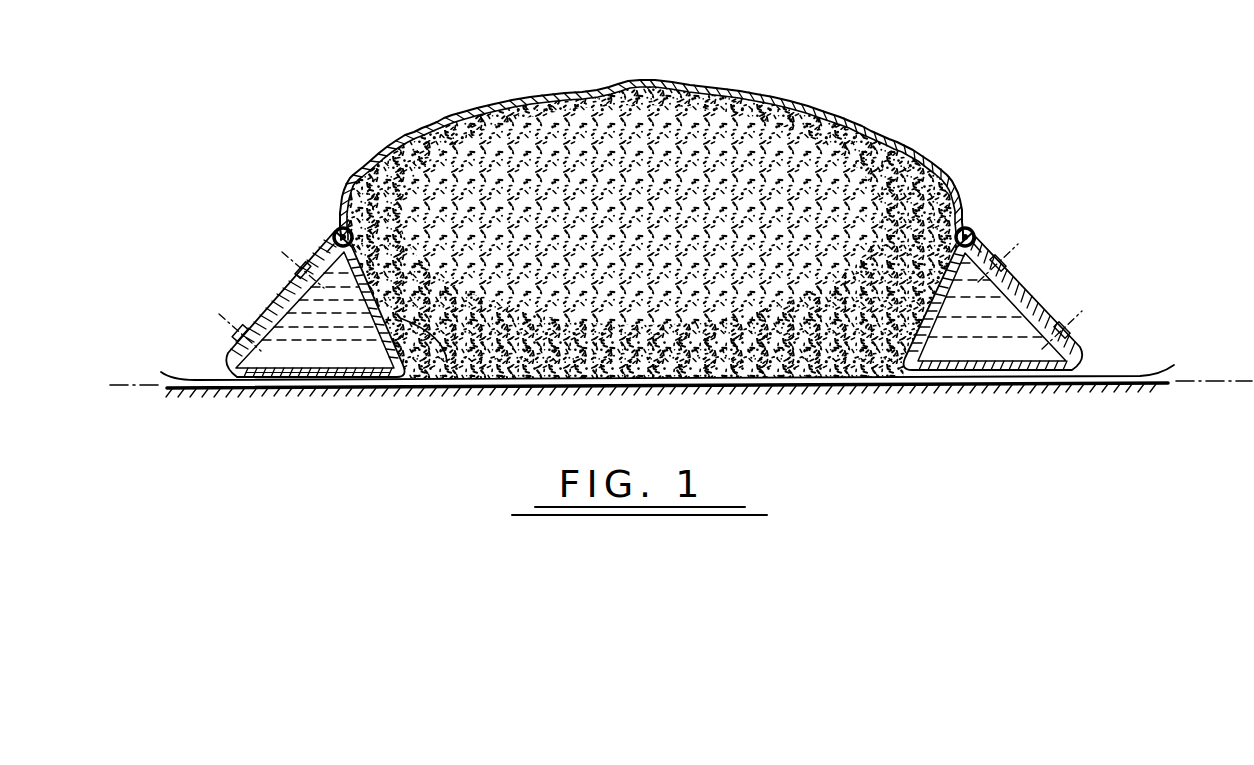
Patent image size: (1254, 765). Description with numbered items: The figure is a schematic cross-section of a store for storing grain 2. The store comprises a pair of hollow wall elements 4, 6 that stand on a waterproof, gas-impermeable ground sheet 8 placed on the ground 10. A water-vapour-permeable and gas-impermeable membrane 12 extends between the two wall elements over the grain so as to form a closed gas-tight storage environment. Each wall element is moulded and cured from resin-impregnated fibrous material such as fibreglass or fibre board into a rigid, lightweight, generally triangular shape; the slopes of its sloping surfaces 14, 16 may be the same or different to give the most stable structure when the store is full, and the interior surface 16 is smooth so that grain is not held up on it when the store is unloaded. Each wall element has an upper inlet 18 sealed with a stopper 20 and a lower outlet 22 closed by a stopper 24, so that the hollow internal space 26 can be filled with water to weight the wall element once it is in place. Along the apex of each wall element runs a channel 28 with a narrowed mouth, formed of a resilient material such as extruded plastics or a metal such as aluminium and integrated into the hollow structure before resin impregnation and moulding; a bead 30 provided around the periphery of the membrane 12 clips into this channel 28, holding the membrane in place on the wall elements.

The grain 2 is at (665, 233).
The hollow wall element 4 is at (360, 373).
The hollow wall element 6 is at (982, 382).
The ground sheet 8 is at (628, 390).
The ground 10 is at (1124, 456).
The membrane 12 is at (841, 113).
The sloping surface 14 is at (280, 297).
The interior surface 16 is at (447, 362).
The upper inlet 18 is at (317, 268).
The stopper 20 is at (293, 268).
The lower outlet 22 is at (250, 318).
The stopper 24 is at (232, 338).
The hollow internal space 26 is at (282, 350).
The channel 28 is at (975, 232).
The bead 30 is at (980, 240).